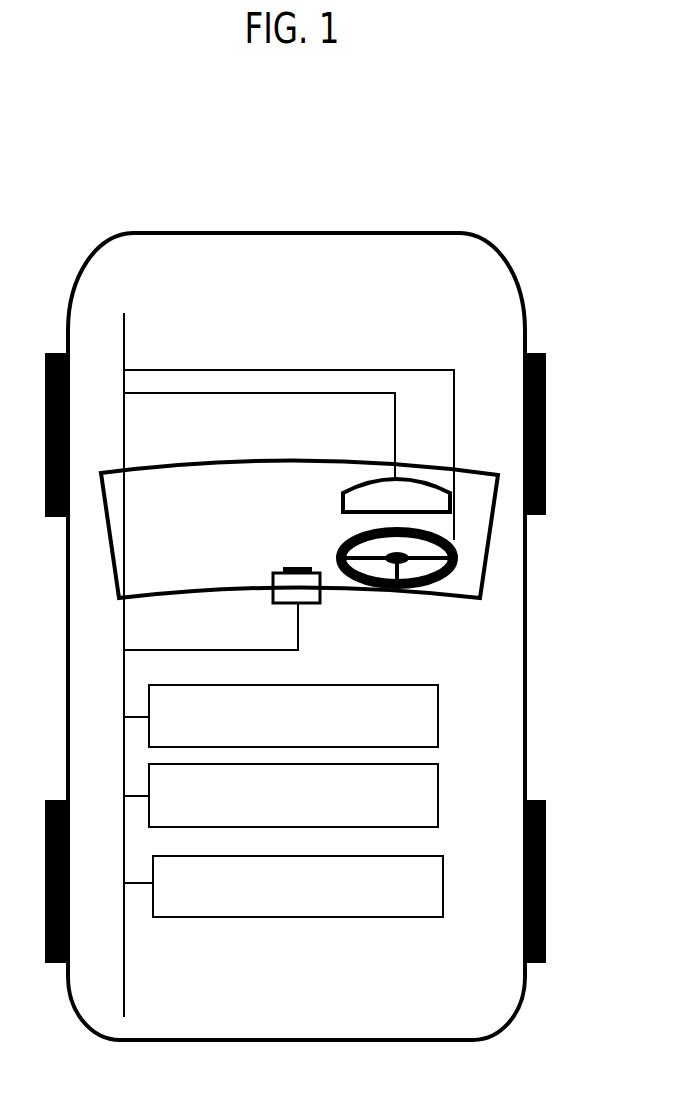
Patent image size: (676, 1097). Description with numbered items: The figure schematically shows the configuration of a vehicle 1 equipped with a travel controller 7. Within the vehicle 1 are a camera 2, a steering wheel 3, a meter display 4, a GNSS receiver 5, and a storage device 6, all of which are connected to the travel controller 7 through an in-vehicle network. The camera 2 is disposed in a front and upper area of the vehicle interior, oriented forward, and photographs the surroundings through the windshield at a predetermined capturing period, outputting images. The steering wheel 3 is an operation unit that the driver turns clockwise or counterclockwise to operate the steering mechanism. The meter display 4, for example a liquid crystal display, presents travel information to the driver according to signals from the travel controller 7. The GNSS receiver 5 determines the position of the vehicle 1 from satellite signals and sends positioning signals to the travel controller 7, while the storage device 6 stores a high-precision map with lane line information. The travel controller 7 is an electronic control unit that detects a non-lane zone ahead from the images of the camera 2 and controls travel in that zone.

The vehicle 1 is at (433, 221).
The camera 2 is at (320, 600).
The steering wheel 3 is at (382, 592).
The meter display 4 is at (362, 483).
The GNSS receiver 5 is at (438, 717).
The storage device 6 is at (438, 795).
The travel controller 7 is at (443, 888).